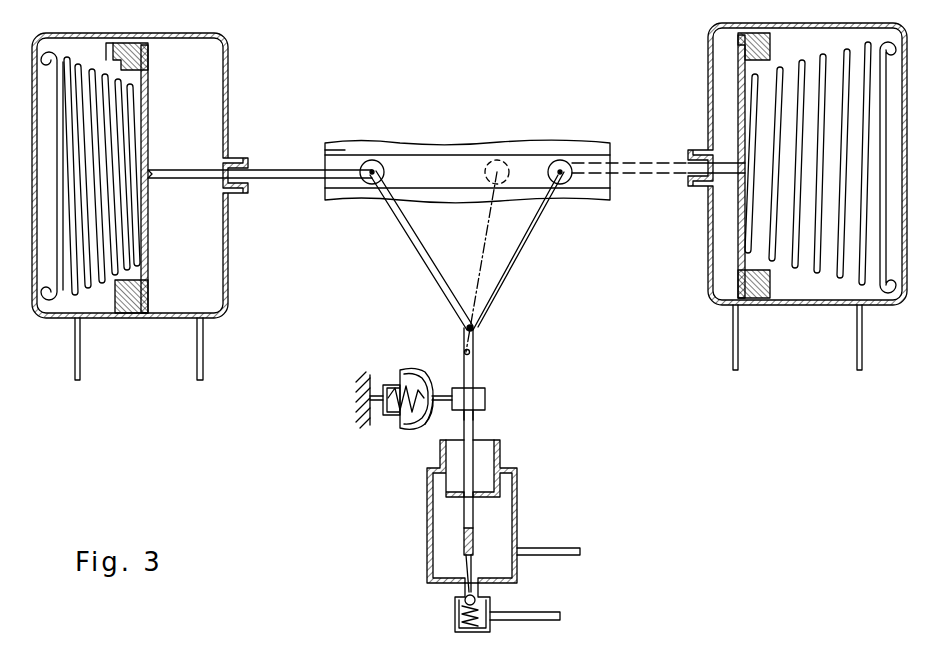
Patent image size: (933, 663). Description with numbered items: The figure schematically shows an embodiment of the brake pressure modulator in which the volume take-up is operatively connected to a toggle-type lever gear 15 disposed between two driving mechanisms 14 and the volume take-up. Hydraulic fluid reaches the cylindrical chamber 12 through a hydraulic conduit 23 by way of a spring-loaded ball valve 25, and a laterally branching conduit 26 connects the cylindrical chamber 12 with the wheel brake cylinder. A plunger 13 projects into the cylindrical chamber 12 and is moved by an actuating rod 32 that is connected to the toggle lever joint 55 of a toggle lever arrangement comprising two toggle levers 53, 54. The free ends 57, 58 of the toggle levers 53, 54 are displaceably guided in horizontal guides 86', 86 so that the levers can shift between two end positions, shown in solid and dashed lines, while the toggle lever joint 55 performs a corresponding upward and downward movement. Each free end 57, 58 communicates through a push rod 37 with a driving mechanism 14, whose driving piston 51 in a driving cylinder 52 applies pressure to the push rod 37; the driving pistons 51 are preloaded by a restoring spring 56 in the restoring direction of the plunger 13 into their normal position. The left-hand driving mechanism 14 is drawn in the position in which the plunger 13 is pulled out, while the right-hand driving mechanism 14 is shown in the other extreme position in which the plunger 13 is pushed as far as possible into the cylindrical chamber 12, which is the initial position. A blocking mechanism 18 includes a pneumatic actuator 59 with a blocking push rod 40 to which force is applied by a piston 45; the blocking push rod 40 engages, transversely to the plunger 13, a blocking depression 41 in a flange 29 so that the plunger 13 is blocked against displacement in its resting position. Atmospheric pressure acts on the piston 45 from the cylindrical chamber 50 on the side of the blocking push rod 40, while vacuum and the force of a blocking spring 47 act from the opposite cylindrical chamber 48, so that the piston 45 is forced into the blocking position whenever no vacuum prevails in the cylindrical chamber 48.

The cylindrical chamber 12 is at (445, 548).
The plunger 13 is at (466, 522).
The driving mechanism 14 is at (137, 322).
The gear 15 is at (467, 263).
The blocking mechanism 18 is at (368, 372).
The hydraulic conduit 23 is at (532, 616).
The ball valve 25 is at (460, 596).
The laterally branching conduit 26 is at (555, 549).
The flange 29 is at (487, 398).
The actuating rod 32 is at (475, 378).
The push rod 37 is at (278, 180).
The blocking push rod 40 is at (446, 394).
The blocking depression 41 is at (470, 414).
The piston 45 is at (404, 426).
The blocking spring 47 is at (392, 412).
The cylindrical chamber 48 is at (400, 384).
The cylindrical chamber 50 is at (430, 428).
The driving piston 51 is at (150, 128).
The driving cylinder 52 is at (175, 318).
The toggle lever 53 is at (538, 226).
The toggle lever 54 is at (398, 226).
The toggle lever joint 55 is at (472, 352).
The restoring spring 56 is at (98, 283).
The free end 57 is at (554, 158).
The free end 58 is at (386, 158).
The pneumatic actuator 59 is at (412, 364).
The horizontal guide 86 is at (478, 145).
The horizontal guide 86' is at (340, 119).